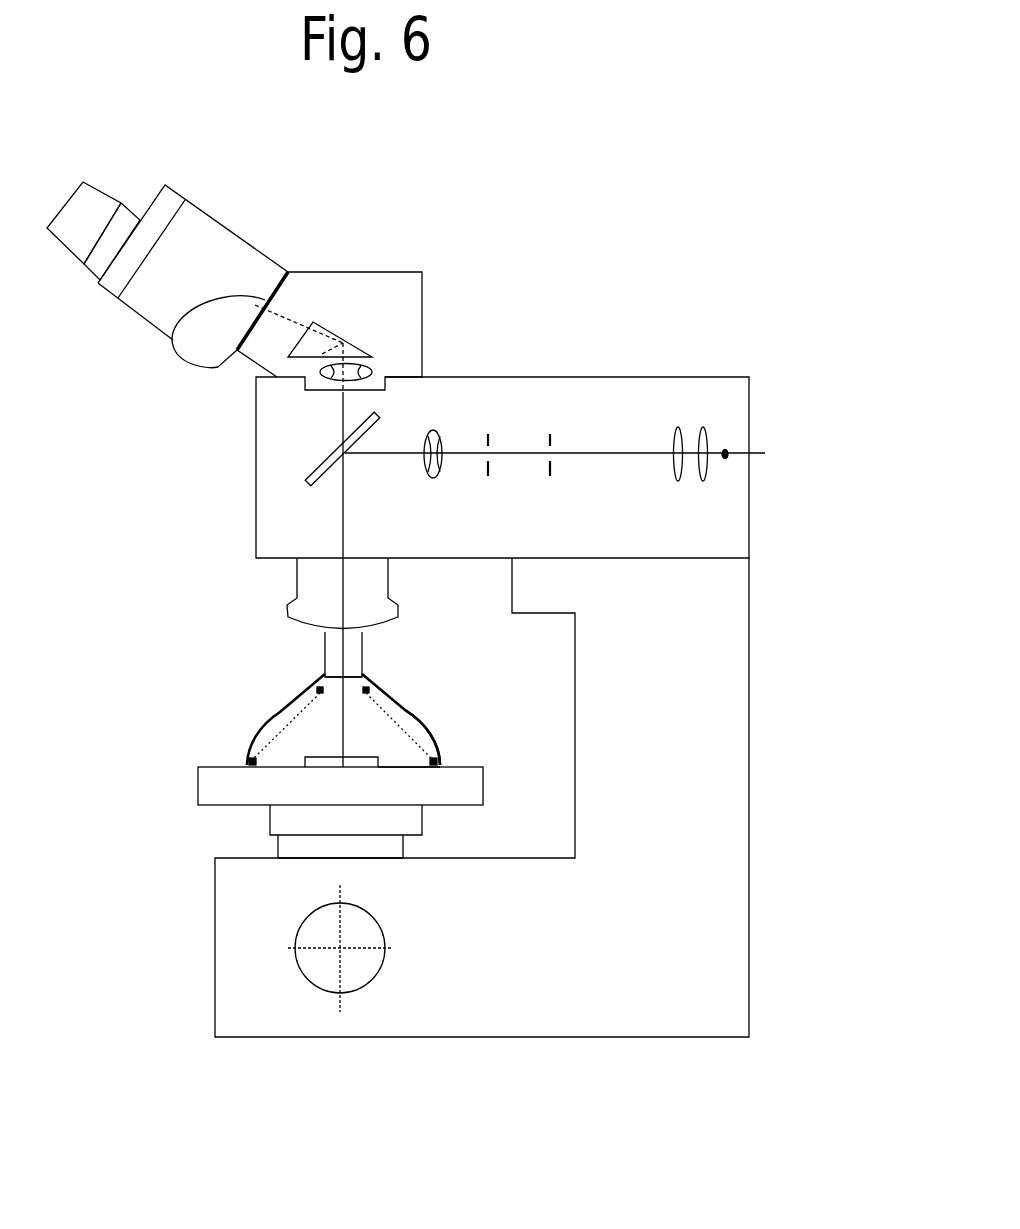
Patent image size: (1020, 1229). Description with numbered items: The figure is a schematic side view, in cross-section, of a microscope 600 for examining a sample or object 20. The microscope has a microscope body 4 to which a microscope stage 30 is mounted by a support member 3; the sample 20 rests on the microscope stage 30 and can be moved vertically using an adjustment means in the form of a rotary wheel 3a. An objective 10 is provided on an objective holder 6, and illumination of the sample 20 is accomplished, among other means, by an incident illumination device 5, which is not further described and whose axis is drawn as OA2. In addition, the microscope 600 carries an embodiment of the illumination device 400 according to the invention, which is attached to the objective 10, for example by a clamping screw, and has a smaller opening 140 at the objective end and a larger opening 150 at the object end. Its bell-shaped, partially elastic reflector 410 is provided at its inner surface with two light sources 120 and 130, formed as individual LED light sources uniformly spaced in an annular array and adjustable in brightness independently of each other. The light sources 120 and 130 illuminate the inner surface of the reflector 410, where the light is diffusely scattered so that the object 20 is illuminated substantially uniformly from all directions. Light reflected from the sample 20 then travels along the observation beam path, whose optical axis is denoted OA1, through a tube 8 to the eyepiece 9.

The microscope 600 is at (536, 139).
The eyepiece 9 is at (214, 218).
The tube 8 is at (405, 271).
The incident illumination device 5 is at (608, 377).
The second optical axis OA2 is at (578, 453).
The optical axis of the observation beam path OA1 is at (343, 512).
The objective holder 6 is at (287, 605).
The objective 10 is at (325, 655).
The illumination device 400 is at (290, 687).
The reflector 410 is at (422, 724).
The light source 130 is at (323, 691).
The light source 120 is at (440, 760).
The smaller opening 140 is at (347, 681).
The larger opening 150 is at (393, 764).
The sample 20 is at (305, 762).
The microscope stage 30 is at (198, 783).
The support member 3 is at (270, 820).
The rotary wheel 3a is at (307, 918).
The microscope body 4 is at (687, 1040).